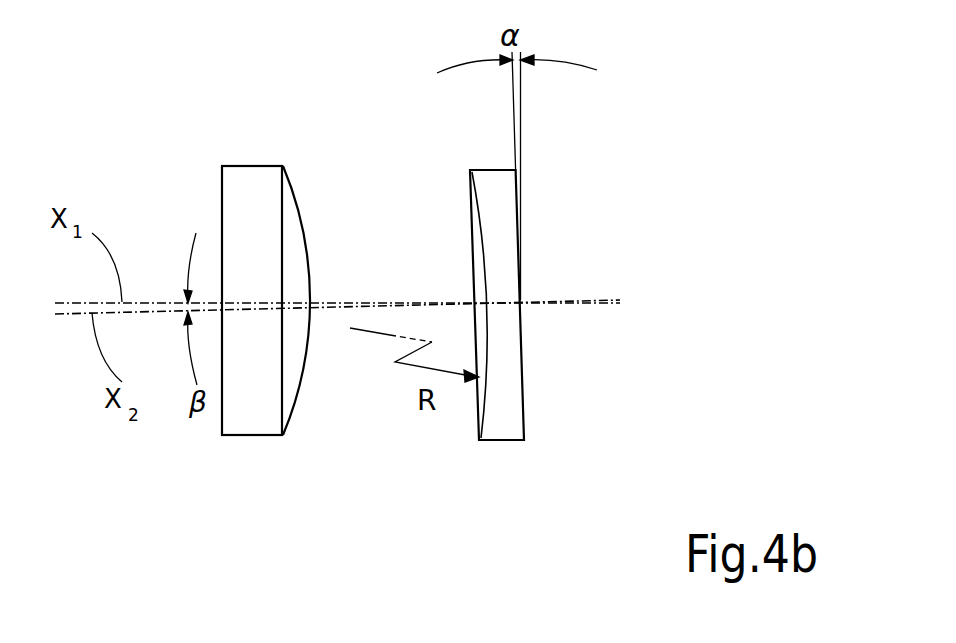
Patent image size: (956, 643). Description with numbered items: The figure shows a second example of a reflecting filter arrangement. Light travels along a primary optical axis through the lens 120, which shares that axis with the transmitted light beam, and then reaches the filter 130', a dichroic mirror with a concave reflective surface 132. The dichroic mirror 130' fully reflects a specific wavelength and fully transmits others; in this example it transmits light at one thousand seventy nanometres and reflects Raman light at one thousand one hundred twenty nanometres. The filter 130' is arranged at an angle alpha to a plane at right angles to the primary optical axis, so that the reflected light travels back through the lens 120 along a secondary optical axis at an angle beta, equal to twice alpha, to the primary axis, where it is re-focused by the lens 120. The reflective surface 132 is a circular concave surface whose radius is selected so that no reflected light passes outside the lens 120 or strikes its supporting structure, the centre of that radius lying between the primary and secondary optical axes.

The lens 120 is at (253, 436).
The filter 130' is at (539, 280).
The concave reflective surface 132 is at (463, 243).